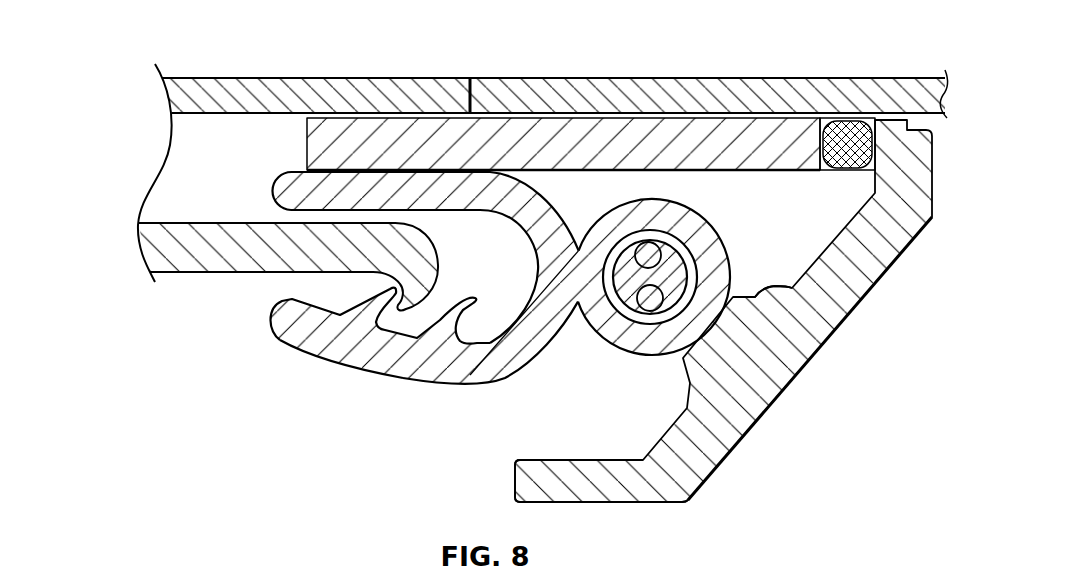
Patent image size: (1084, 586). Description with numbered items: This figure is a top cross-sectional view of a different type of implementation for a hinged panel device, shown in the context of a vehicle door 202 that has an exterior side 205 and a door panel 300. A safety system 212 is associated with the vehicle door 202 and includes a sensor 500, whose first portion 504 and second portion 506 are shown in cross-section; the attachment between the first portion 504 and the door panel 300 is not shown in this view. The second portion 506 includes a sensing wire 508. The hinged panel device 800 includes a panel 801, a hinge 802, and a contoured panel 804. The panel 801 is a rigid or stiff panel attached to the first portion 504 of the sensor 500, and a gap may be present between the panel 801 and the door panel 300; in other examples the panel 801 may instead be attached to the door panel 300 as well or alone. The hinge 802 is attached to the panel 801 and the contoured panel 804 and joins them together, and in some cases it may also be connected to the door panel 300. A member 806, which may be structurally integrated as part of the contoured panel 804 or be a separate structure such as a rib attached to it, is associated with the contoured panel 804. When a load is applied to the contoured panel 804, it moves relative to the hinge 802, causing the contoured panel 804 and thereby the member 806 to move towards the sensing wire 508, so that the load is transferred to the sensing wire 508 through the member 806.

The vehicle door 202 is at (130, 108).
The door panel 300 is at (216, 70).
The exterior side 205 is at (486, 58).
The panel 801 is at (722, 118).
The hinge 802 is at (846, 115).
The hinged panel device 800 is at (838, 350).
The member 806 is at (773, 280).
The contoured panel 804 is at (747, 428).
The first portion 504 is at (412, 385).
The sensor 500 is at (293, 360).
The safety system 212 is at (365, 385).
The second portion 506 is at (594, 336).
The sensing wire 508 is at (672, 262).